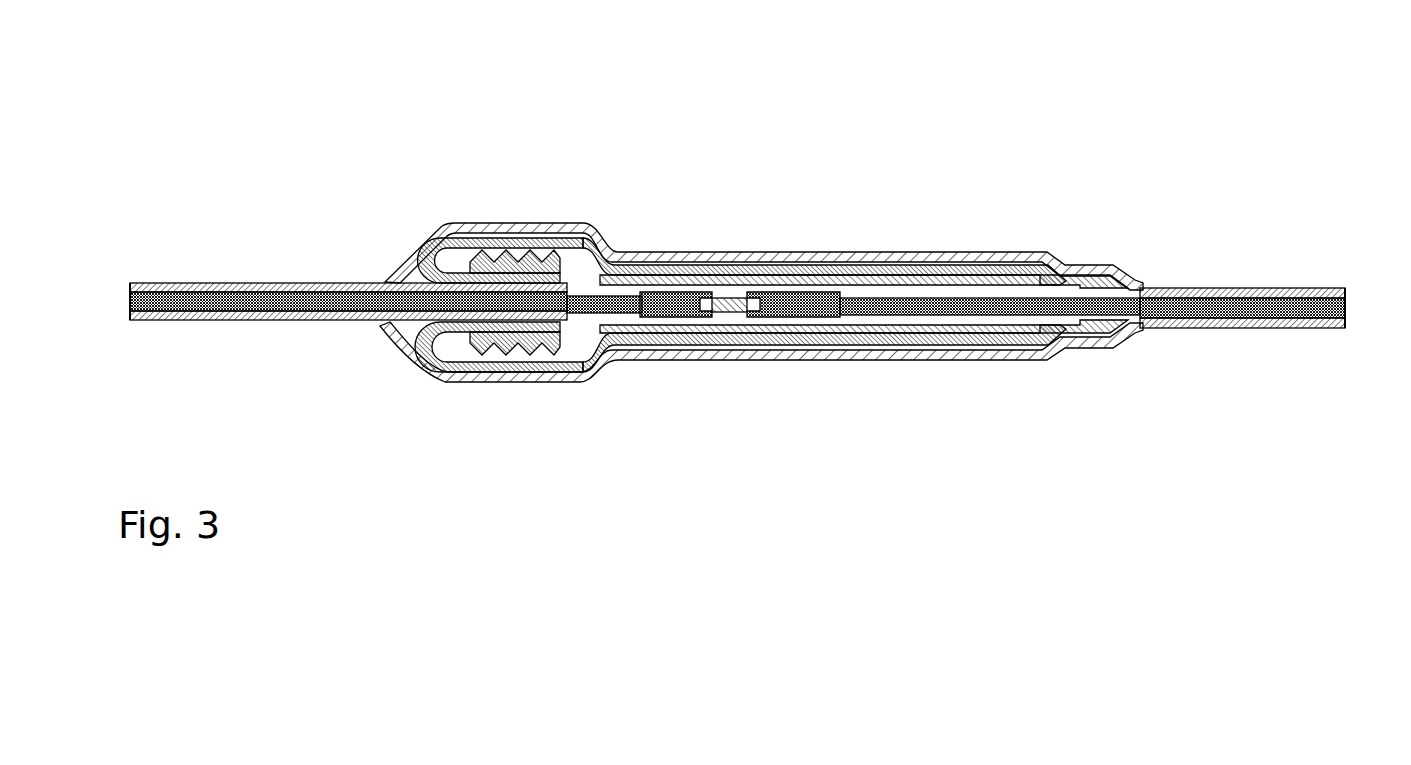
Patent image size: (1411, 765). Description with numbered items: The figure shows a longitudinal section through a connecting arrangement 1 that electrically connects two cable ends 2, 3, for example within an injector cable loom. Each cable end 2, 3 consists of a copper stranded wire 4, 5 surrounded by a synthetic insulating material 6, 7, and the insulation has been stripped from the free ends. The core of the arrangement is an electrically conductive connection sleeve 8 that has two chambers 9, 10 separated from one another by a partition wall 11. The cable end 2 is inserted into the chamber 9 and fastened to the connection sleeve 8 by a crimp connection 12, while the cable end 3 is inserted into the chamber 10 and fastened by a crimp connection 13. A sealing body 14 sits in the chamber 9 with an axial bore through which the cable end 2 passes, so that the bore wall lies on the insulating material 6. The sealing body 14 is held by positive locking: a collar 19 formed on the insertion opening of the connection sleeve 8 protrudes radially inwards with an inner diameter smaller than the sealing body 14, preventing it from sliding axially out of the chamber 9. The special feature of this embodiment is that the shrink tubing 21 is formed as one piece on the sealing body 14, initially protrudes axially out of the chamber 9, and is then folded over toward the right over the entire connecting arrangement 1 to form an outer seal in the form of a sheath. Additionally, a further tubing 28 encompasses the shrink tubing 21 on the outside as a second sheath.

The connecting arrangement 1 is at (738, 108).
The cable end 2 is at (236, 328).
The cable end 3 is at (1256, 343).
The stranded wire 4 is at (128, 300).
The stranded wire 5 is at (1347, 305).
The insulating material 6 is at (215, 283).
The insulating material 7 is at (1200, 288).
The connection sleeve 8 is at (753, 360).
The chamber 9 is at (603, 366).
The chamber 10 is at (870, 345).
The partition wall 11 is at (752, 262).
The crimp connection 12 is at (650, 262).
The crimp connection 13 is at (830, 262).
The sealing body 14 is at (502, 370).
The collar 19 is at (410, 357).
The shrink tubing 21 is at (487, 225).
The further tubing 28 is at (550, 226).